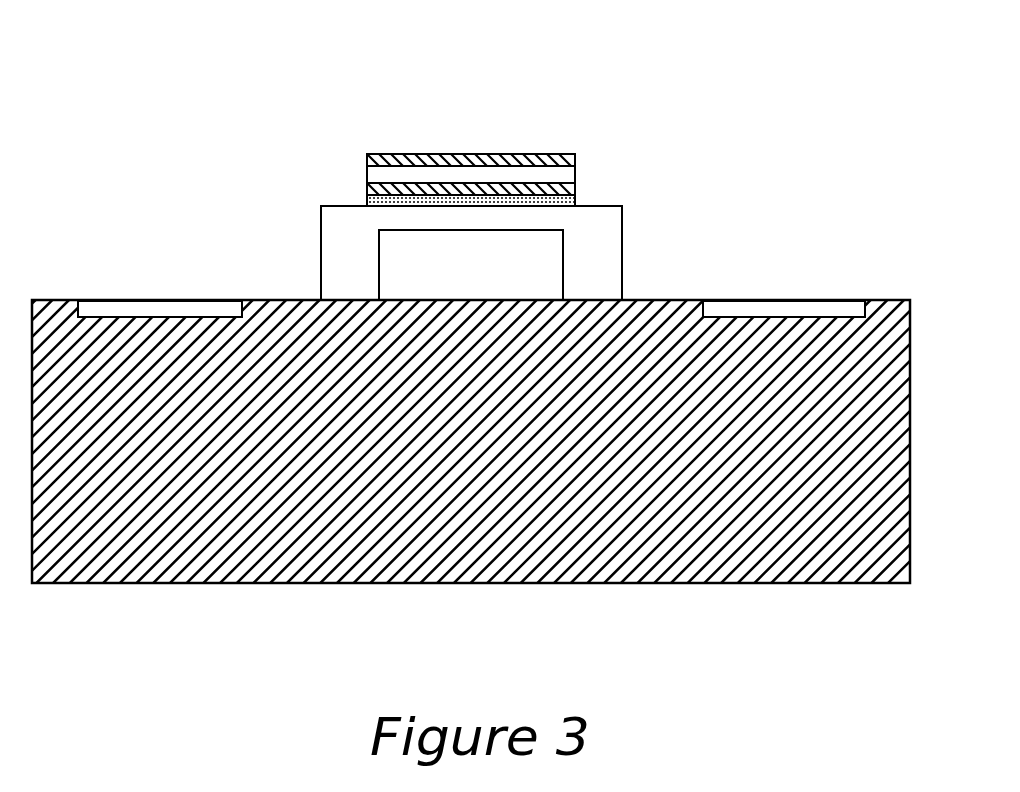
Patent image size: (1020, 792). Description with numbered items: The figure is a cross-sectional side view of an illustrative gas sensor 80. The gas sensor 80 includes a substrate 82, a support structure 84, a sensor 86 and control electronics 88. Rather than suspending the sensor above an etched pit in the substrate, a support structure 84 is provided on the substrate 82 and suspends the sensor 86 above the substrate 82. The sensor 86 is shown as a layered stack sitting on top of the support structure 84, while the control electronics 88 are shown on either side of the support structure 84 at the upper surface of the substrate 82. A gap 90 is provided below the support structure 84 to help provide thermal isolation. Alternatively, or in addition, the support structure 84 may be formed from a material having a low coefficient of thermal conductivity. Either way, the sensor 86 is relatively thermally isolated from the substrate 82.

The gas sensor 80 is at (510, 337).
The substrate 82 is at (755, 558).
The support structure 84 is at (607, 242).
The sensor 86 is at (531, 134).
The control electronics 88 is at (157, 308).
The gap 90 is at (490, 282).